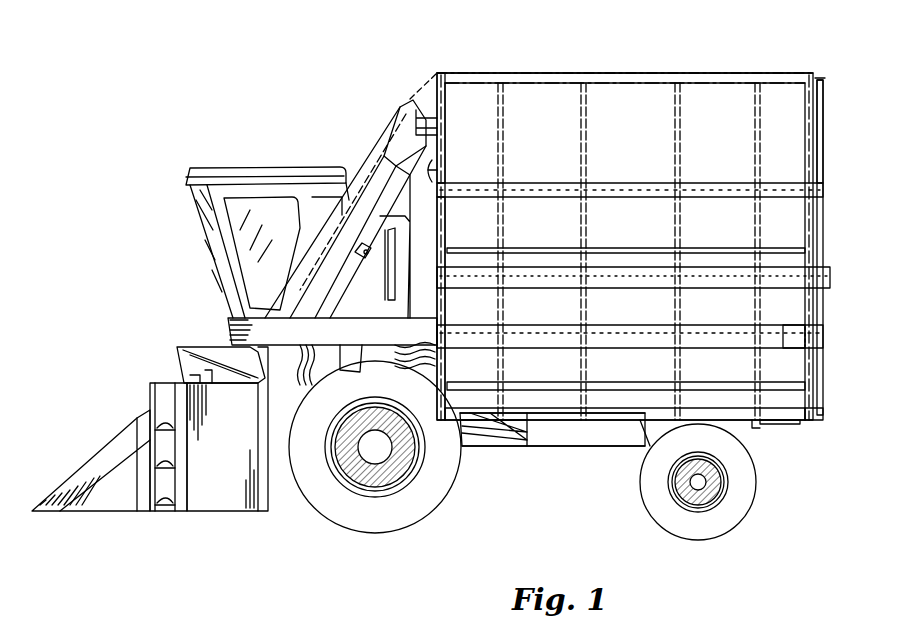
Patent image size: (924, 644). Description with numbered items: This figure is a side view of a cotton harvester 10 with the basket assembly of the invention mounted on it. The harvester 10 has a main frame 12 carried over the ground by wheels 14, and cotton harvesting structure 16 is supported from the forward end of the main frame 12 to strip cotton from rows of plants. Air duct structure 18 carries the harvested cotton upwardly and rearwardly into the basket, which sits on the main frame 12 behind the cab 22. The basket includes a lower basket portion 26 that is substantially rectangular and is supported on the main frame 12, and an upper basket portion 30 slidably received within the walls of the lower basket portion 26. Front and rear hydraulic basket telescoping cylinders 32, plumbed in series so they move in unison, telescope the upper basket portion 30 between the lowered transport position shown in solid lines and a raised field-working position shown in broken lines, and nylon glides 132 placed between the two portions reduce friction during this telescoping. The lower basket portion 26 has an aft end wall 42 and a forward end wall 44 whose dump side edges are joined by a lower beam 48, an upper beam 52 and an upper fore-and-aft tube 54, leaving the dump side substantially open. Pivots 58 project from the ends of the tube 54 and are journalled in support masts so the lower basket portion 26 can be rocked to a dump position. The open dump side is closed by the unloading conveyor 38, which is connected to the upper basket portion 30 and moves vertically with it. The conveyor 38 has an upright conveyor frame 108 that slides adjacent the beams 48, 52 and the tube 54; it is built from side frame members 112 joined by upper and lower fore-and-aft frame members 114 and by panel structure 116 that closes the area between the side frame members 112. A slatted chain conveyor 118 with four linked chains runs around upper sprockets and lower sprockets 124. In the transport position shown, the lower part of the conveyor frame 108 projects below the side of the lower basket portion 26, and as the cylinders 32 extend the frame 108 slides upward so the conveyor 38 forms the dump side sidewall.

The cotton harvester 10 is at (207, 118).
The main frame 12 is at (545, 445).
The wheels 14 is at (426, 518).
The cotton harvesting structure 16 is at (125, 384).
The air duct structure 18 is at (368, 120).
The cab 22 is at (240, 168).
The lower basket portion 26 is at (818, 308).
The upper basket portion 30 is at (782, 75).
The hydraulic basket telescoping cylinders 32 is at (420, 88).
The unloading conveyor 38 is at (765, 430).
The aft end wall 42 is at (822, 335).
The forward end wall 44 is at (446, 232).
The lower fore-and-aft extending beam 48 is at (785, 340).
The upper fore-and-aft extending beam 52 is at (820, 280).
The upper fore-and-aft extending tube 54 is at (800, 193).
The pivots 58 is at (440, 159).
The upright conveyor frame 108 is at (812, 420).
The side frame members 112 is at (812, 397).
The upper and lower fore-and-aft extending frame members 114 is at (615, 420).
The panel structure 116 is at (640, 377).
The slatted chain conveyor 118 is at (770, 400).
The lower sprockets 124 is at (640, 425).
The nylon glides 132 is at (822, 348).